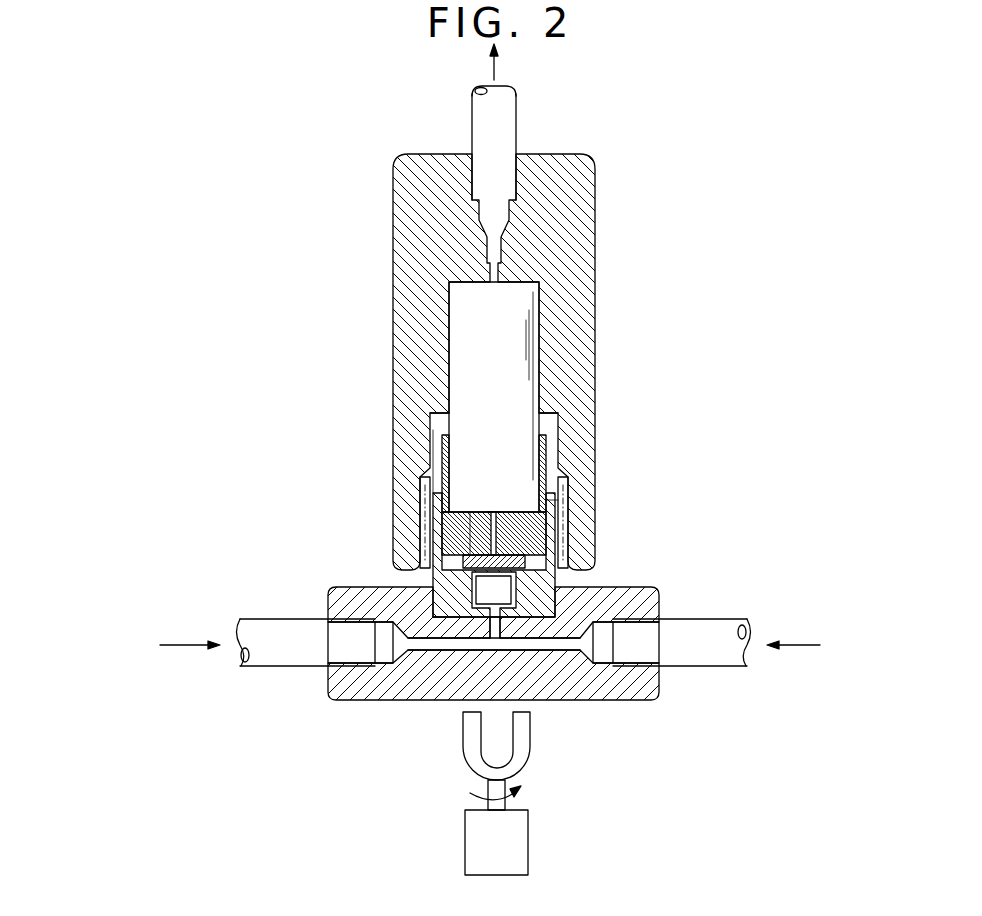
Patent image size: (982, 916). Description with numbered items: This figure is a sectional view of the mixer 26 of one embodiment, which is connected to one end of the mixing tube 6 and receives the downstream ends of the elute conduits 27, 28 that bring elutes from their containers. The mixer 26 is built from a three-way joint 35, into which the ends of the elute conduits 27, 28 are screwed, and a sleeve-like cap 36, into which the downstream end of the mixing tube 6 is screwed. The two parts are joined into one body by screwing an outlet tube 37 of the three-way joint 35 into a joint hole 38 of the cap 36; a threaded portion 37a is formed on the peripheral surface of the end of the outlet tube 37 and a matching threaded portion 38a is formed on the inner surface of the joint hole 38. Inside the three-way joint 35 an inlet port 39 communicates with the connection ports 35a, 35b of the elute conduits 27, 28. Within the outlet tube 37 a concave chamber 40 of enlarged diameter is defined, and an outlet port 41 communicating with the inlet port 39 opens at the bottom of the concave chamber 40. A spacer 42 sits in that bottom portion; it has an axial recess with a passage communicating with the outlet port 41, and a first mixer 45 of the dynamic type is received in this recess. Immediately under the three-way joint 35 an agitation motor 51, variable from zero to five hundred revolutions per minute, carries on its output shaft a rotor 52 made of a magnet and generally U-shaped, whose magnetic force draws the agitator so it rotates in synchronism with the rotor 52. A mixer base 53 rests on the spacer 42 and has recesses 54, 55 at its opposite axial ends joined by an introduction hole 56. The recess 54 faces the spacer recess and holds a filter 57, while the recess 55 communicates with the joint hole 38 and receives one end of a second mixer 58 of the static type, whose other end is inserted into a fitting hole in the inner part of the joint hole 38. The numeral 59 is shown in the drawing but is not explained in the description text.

The mixing tube 6 is at (506, 120).
The mixer 26 is at (340, 195).
The elute conduit 27 is at (704, 632).
The elute conduit 28 is at (273, 630).
The three-way joint 35 is at (592, 693).
The connection port 35a is at (603, 664).
The connection port 35b is at (383, 660).
The sleeve-like cap 36 is at (578, 302).
The outlet tube 37 is at (548, 530).
The threaded portion 37a is at (420, 527).
The joint hole 38 is at (556, 428).
The threaded portion 38a is at (560, 478).
The inlet port 39 is at (440, 649).
The concave chamber 40 is at (532, 600).
The outlet port 41 is at (490, 641).
The spacer 42 is at (455, 596).
The first mixer 45 is at (480, 596).
The agitation motor 51 is at (522, 837).
The rotor 52 is at (523, 742).
The mixer base 53 is at (562, 500).
The recess 54 is at (468, 510).
The recess 55 is at (452, 476).
The introduction hole 56 is at (494, 512).
The filter 57 is at (525, 558).
The second mixer 58 is at (512, 290).
The cylinder bore 59 is at (458, 334).